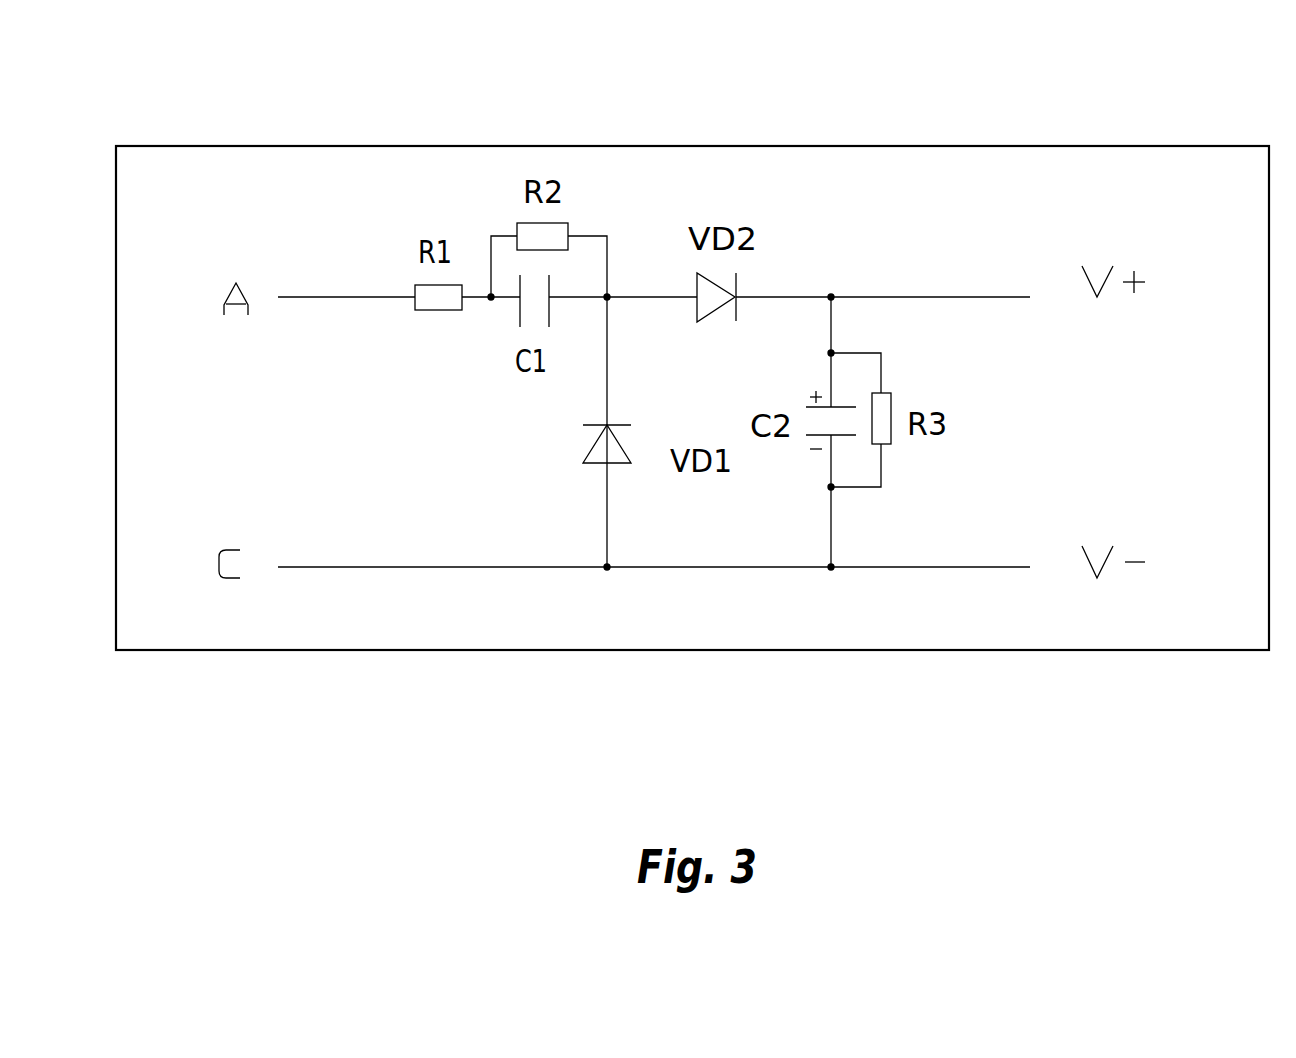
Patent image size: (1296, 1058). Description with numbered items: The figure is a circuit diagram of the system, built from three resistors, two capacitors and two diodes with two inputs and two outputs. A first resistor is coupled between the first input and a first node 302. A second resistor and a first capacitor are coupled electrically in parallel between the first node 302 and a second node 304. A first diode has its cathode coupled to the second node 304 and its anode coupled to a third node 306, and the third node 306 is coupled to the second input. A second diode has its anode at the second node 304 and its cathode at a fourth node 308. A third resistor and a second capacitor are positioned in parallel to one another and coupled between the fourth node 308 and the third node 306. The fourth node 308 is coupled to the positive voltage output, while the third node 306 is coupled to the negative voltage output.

The first node 302 is at (491, 297).
The second node 304 is at (607, 297).
The third node 306 is at (831, 567).
The fourth node 308 is at (831, 297).